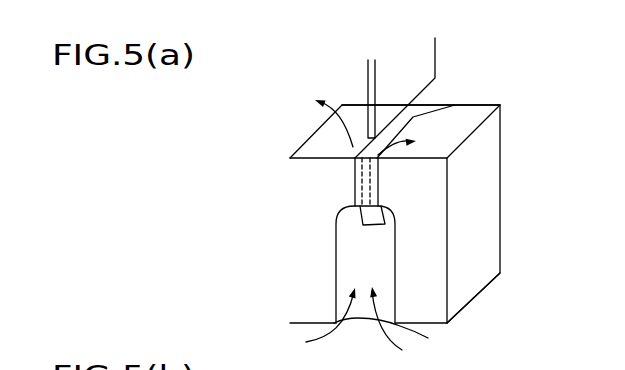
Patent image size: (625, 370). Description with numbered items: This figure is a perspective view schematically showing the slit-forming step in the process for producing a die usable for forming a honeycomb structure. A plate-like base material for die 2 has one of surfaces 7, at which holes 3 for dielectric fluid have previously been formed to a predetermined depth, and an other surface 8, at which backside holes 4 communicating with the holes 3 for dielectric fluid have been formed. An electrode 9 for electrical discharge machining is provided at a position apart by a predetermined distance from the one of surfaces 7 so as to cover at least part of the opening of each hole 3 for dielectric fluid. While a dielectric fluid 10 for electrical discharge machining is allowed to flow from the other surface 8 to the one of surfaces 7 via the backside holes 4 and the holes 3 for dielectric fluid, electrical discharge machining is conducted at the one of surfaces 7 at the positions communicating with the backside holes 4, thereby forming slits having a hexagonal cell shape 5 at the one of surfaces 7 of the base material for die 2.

The base material for die 2 is at (493, 248).
The hole for dielectric fluid 3 is at (372, 193).
The backside hole 4 is at (387, 297).
The slit having a hexagonal cell shape 5 is at (398, 124).
The one of surfaces 7 is at (484, 86).
The other surface 8 is at (488, 299).
The electrode for electrical discharge machining 9 is at (433, 52).
The dielectric fluid for electrical discharge machining 10 is at (354, 327).